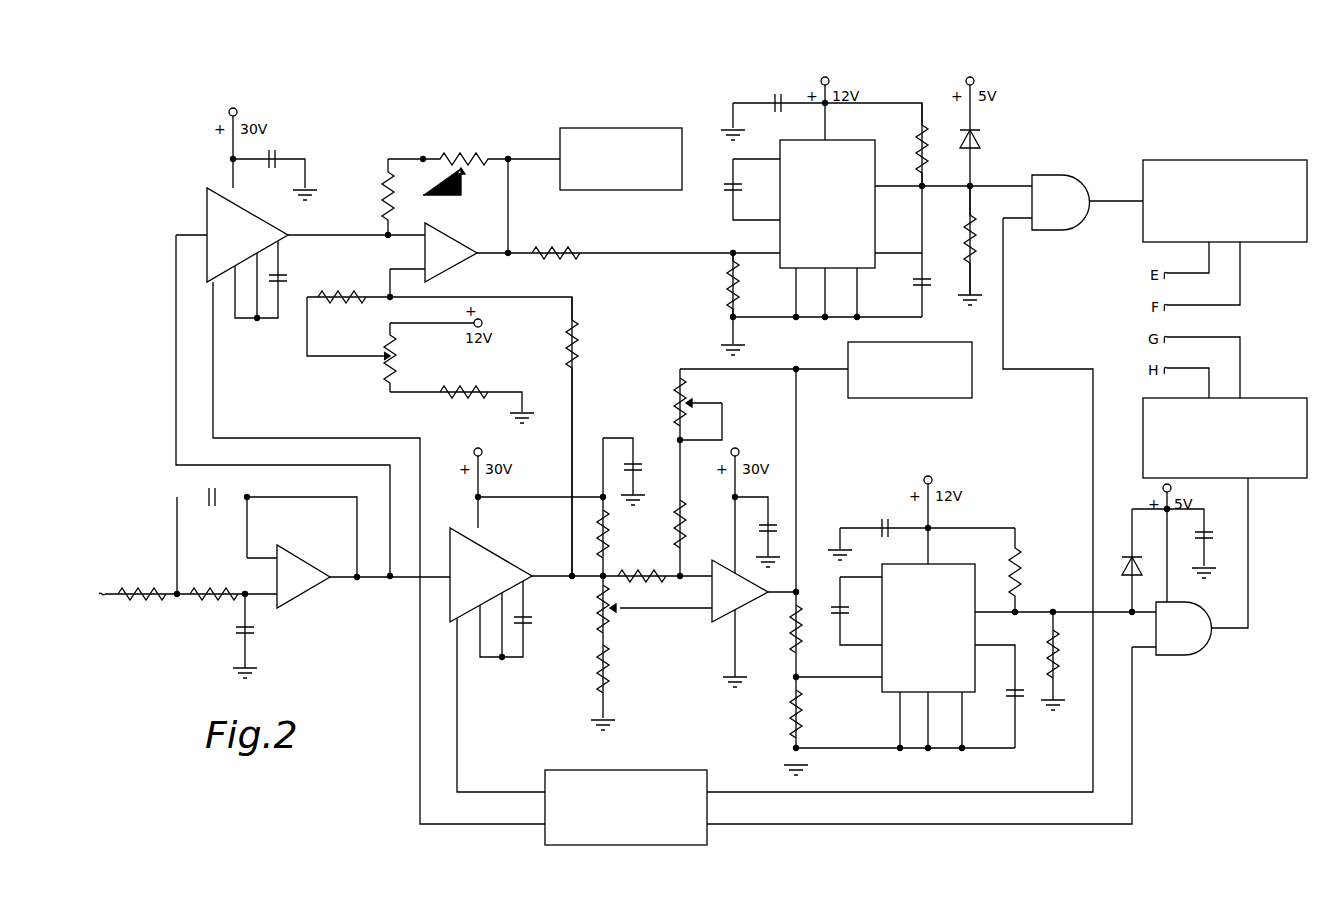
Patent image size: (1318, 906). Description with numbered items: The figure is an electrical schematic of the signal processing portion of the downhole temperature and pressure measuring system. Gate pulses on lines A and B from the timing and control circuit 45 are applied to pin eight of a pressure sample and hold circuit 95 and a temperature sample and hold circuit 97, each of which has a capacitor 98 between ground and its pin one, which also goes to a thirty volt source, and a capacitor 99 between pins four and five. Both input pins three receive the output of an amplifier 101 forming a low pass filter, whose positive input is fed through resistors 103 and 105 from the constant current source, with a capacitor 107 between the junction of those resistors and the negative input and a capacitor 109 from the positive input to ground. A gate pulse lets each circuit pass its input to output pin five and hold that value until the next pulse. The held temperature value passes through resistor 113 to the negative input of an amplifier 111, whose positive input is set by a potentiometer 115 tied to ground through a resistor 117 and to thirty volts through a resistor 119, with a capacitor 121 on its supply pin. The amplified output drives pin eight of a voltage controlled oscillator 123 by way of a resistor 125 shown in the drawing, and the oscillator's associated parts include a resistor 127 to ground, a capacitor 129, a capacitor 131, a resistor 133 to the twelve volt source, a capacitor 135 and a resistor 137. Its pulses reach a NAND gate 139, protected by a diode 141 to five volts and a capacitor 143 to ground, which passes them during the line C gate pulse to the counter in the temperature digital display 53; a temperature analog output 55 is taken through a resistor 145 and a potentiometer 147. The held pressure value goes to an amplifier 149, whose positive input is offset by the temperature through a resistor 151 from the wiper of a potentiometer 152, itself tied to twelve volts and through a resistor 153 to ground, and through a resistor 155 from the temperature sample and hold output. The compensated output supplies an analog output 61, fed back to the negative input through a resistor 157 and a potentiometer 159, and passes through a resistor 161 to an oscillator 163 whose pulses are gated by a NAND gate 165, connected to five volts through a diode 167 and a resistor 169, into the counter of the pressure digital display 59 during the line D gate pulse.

The timing and control circuit 45 is at (626, 770).
The digital display 53 is at (1252, 398).
The analog output 55 is at (940, 398).
The digital display 59 is at (1190, 160).
The analog output 61 is at (600, 128).
The pressure sample and hold circuit 95 is at (207, 205).
The temperature sample and hold circuit 97 is at (490, 544).
The capacitor 98 is at (278, 158).
The capacitor 99 is at (285, 280).
The amplifier 101 is at (300, 555).
The resistor 103 is at (152, 588).
The resistor 105 is at (218, 588).
The capacitor 107 is at (222, 506).
The capacitor 109 is at (238, 628).
The amplifier 111 is at (717, 625).
The resistor 113 is at (632, 573).
The potentiometer 115 is at (598, 610).
The resistor 117 is at (598, 670).
The resistor 119 is at (607, 542).
The capacitor 121 is at (775, 521).
The voltage controlled oscillator 123 is at (940, 564).
The resistor 125 is at (790, 632).
The resistor 127 is at (802, 702).
The capacitor 129 is at (1014, 698).
The capacitor 131 is at (838, 622).
The resistor 133 is at (1020, 564).
The capacitor 135 is at (903, 523).
The resistor 137 is at (1047, 650).
The NAND gate 139 is at (1192, 658).
The diode 141 is at (1130, 557).
The capacitor 143 is at (1206, 532).
The resistor 145 is at (684, 524).
The potentiometer 147 is at (680, 406).
The amplifier 149 is at (454, 270).
The resistor 151 is at (335, 302).
The potentiometer 152 is at (380, 368).
The resistor 153 is at (470, 394).
The resistor 155 is at (570, 346).
The resistor 157 is at (382, 185).
The potentiometer 159 is at (455, 151).
The resistor 161 is at (560, 253).
The oscillator 163 is at (780, 232).
The NAND gate 165 is at (1044, 175).
The diode 167 is at (976, 132).
The resistor 169 is at (970, 223).